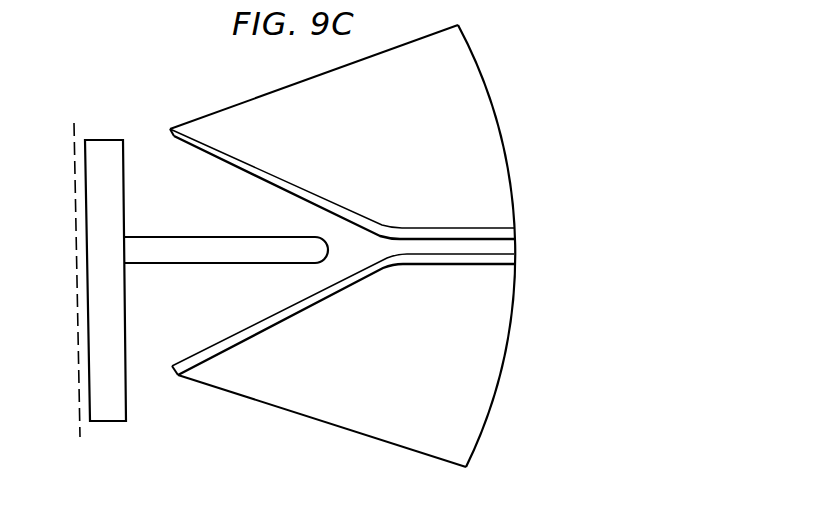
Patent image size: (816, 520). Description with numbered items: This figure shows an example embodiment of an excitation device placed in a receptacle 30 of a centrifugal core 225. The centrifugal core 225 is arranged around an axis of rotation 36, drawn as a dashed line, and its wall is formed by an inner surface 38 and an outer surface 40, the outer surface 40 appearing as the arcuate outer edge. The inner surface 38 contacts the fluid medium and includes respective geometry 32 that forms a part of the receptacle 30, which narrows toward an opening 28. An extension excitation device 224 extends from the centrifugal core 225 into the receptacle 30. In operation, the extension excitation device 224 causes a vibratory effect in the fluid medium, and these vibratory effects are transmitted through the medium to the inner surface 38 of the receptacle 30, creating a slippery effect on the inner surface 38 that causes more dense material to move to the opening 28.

The receptacle 30 is at (379, 246).
The outer surface 40 is at (508, 340).
The geometry 32 is at (275, 183).
The inner surface 38 is at (228, 172).
The opening 28 is at (507, 243).
The axis of rotation 36 is at (74, 182).
The centrifugal core 225 is at (85, 233).
The extension excitation device 224 is at (197, 265).